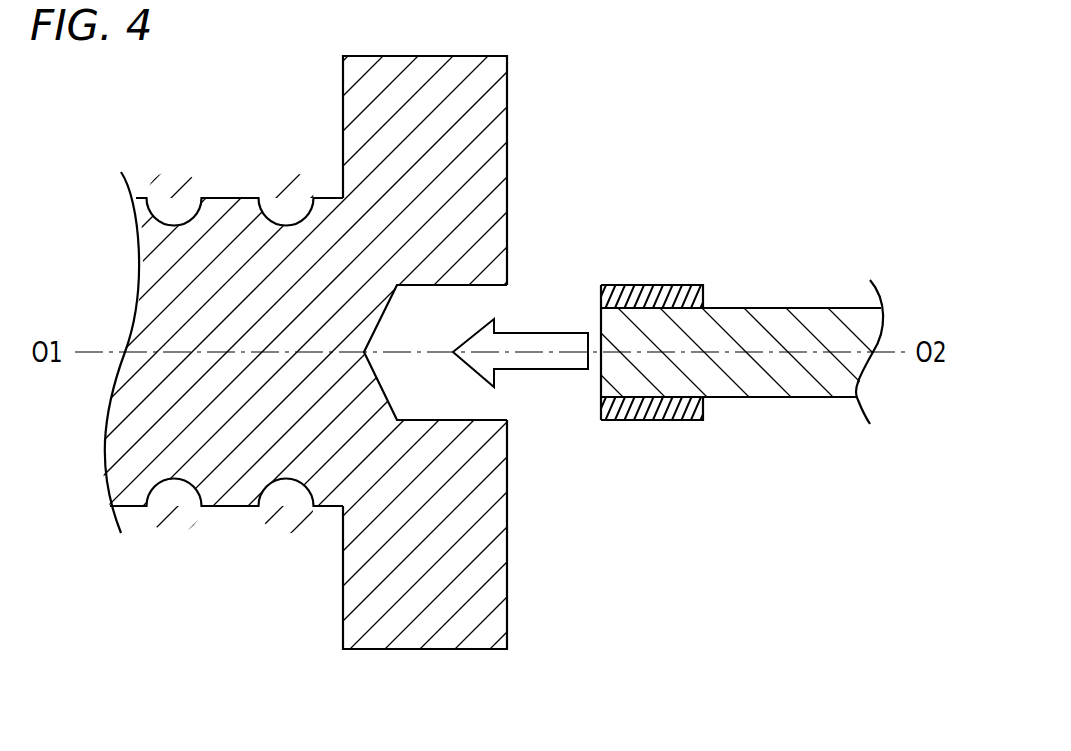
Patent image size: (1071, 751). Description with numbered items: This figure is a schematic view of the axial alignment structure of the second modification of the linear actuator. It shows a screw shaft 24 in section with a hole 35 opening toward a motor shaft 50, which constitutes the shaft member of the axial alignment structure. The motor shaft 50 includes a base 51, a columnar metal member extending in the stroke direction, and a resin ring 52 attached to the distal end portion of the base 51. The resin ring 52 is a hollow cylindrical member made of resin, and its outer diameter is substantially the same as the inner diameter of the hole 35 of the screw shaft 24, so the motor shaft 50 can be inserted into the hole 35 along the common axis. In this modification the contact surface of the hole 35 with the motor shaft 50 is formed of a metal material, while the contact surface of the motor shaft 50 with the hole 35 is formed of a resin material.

The screw shaft 24 is at (235, 483).
The hole 35 is at (430, 287).
The motor shaft 50 is at (660, 338).
The base 51 is at (768, 378).
The resin ring 52 is at (652, 420).